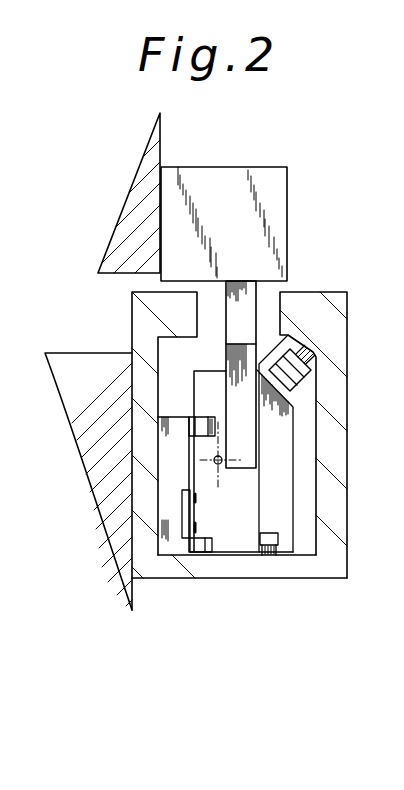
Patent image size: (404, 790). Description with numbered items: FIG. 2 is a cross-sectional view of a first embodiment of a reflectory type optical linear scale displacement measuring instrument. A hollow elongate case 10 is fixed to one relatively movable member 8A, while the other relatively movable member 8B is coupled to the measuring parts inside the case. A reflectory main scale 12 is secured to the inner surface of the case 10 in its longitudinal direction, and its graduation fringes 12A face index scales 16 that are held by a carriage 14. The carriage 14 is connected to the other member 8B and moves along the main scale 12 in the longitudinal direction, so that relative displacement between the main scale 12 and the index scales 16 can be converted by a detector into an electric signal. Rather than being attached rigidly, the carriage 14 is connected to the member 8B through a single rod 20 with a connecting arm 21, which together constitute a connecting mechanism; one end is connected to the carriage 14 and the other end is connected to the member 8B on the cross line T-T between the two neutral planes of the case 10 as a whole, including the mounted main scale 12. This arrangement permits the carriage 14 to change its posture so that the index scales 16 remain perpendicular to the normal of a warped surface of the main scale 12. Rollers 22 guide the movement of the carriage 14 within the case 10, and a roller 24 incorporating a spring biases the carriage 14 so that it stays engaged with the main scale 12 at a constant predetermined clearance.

The one of relatively movable members 8A is at (82, 353).
The other of relatively movable members 8B is at (160, 154).
The hollow elongate case 10 is at (280, 568).
The reflectory main scale 12 is at (167, 556).
The graduation fringes 12A is at (186, 556).
The carriage 14 is at (294, 430).
The index scales 16 is at (198, 530).
The single rod 20 is at (223, 464).
The connecting arm 21 is at (258, 293).
The rollers 22 is at (200, 430).
The roller incorporating a spring 24 is at (313, 354).
The cross line between two neutral planes T-T is at (260, 447).